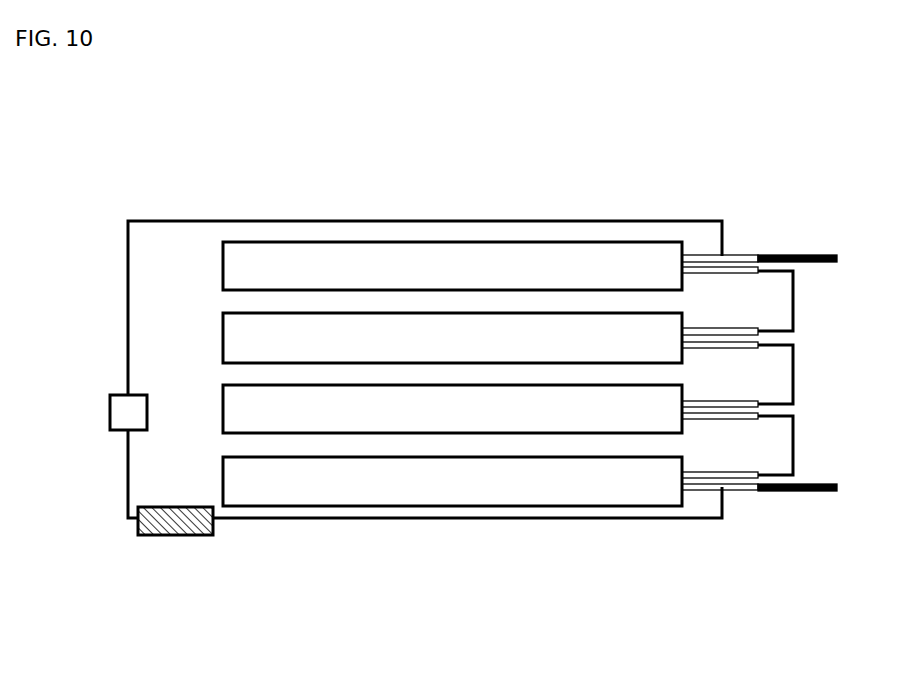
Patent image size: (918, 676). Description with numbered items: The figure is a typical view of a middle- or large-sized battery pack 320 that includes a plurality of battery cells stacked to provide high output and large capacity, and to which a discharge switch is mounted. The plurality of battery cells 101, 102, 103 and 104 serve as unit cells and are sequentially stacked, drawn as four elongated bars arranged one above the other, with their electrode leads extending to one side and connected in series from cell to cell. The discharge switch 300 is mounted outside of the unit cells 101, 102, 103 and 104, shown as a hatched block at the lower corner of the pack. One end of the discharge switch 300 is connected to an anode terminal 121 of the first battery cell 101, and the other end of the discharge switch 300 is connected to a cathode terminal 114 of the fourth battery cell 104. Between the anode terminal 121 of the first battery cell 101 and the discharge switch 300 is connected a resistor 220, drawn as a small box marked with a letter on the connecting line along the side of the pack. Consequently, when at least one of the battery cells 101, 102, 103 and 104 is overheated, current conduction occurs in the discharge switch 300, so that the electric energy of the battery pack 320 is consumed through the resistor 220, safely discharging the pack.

The battery pack 320 is at (376, 308).
The first battery cell 101 is at (260, 241).
The second battery cell 102 is at (223, 330).
The third battery cell 103 is at (223, 415).
The fourth battery cell 104 is at (403, 505).
The anode terminal 121 is at (790, 256).
The cathode terminal 114 is at (800, 492).
The resistor 220 is at (112, 395).
The discharge switch 300 is at (175, 535).